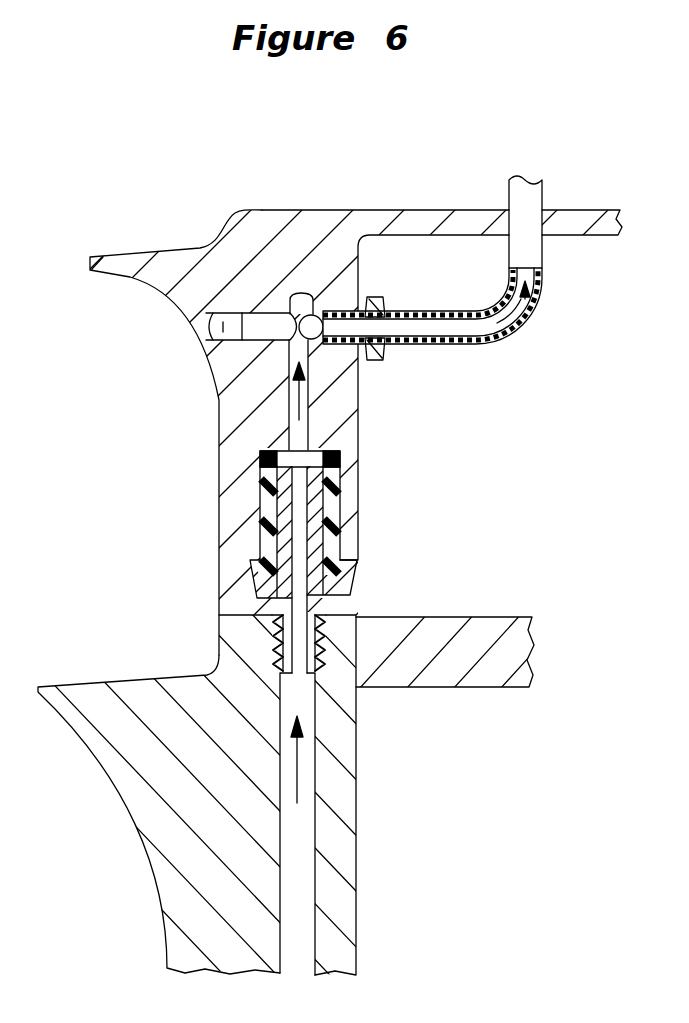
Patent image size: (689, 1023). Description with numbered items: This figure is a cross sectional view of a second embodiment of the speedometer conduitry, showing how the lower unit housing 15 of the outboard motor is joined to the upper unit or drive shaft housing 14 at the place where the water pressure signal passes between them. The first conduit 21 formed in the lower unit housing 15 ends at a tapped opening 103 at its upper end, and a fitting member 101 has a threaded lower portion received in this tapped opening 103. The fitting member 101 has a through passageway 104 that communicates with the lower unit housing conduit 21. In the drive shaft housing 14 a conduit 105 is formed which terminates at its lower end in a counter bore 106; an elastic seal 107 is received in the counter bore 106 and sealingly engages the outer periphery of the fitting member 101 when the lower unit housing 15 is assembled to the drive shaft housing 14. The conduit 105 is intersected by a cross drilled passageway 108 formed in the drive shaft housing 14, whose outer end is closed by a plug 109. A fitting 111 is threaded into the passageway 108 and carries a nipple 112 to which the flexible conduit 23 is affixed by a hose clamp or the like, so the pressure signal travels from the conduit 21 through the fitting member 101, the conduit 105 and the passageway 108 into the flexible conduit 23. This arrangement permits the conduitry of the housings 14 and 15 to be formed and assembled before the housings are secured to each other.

The drive shaft housing 14 is at (229, 242).
The lower unit housing 15 is at (175, 826).
The first conduit 21 is at (295, 827).
The flexible conduit 23 is at (532, 248).
The fitting member 101 is at (340, 602).
The tapped opening 103 is at (318, 655).
The through passageway 104 is at (300, 550).
The conduit 105 is at (313, 433).
The counter bore 106 is at (262, 458).
The elastic seal 107 is at (340, 478).
The cross drilled passageway 108 is at (268, 303).
The plug 109 is at (223, 330).
The fitting 111 is at (392, 300).
The nipple 112 is at (447, 350).